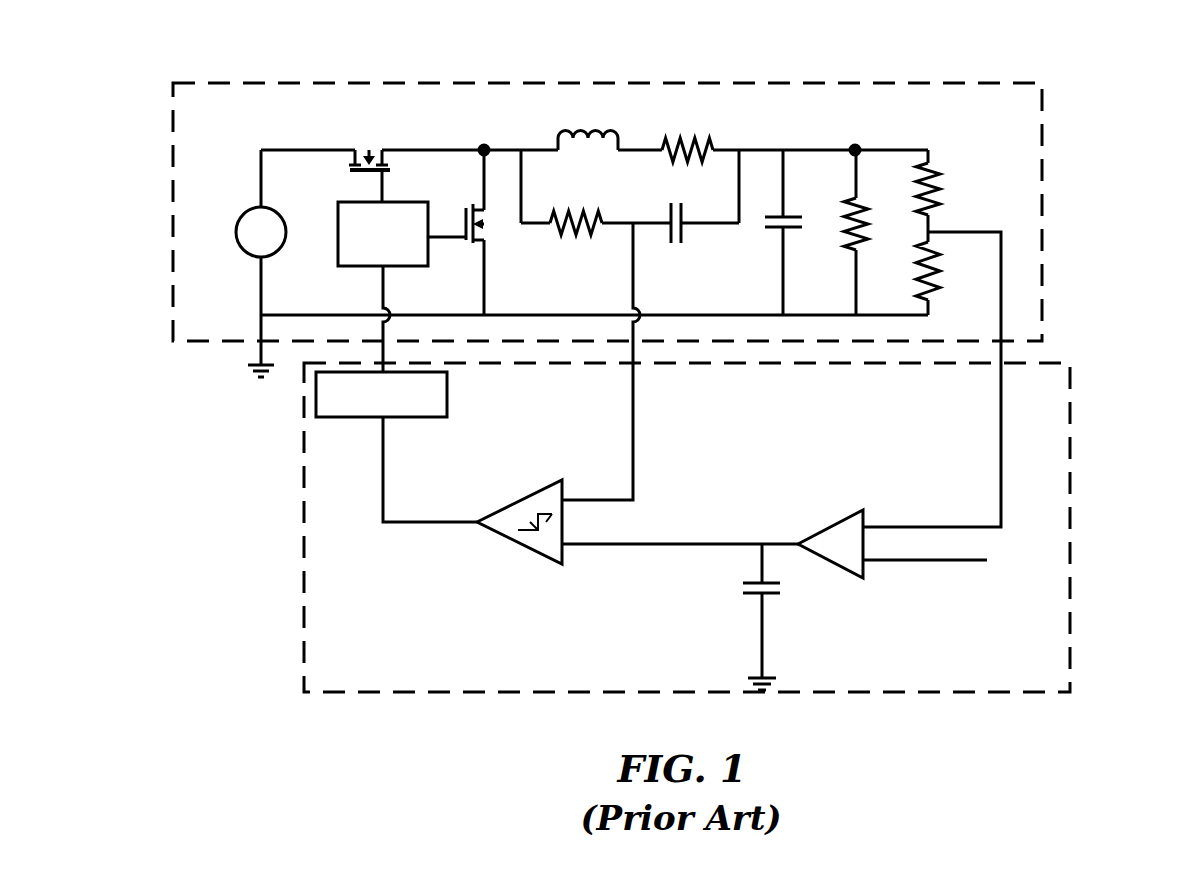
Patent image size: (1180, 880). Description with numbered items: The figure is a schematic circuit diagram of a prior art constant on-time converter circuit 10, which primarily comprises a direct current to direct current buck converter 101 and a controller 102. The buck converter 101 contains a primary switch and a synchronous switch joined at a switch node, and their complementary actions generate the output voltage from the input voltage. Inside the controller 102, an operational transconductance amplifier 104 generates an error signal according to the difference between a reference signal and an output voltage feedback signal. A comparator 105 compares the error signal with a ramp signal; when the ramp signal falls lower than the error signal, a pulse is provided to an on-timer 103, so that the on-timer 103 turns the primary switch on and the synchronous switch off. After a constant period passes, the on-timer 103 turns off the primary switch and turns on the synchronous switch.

The constant on-time converter circuit 10 is at (1118, 261).
The direct current to direct current buck converter 101 is at (1042, 167).
The controller 102 is at (1070, 478).
The on-timer 103 is at (407, 410).
The operational transconductance amplifier 104 is at (808, 537).
The comparator 105 is at (487, 527).